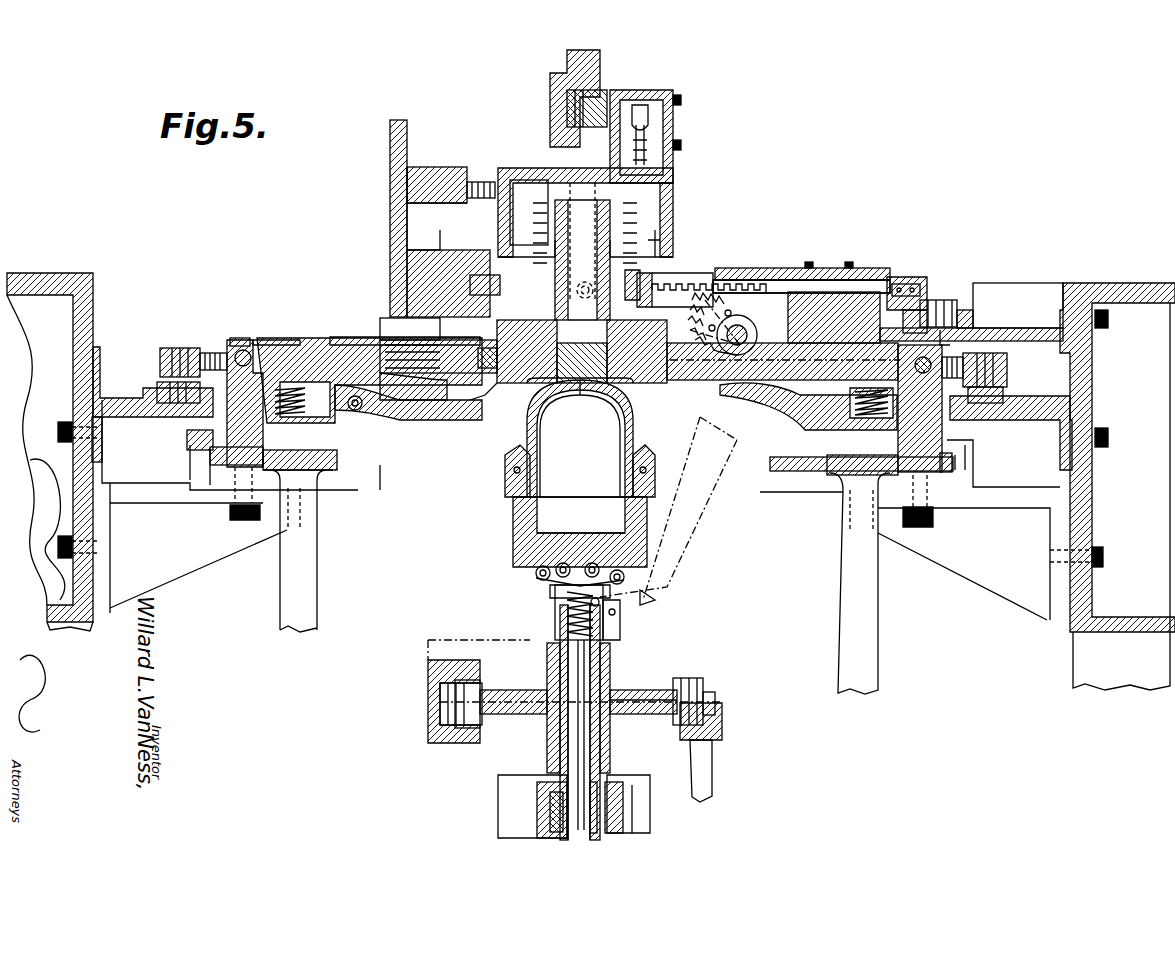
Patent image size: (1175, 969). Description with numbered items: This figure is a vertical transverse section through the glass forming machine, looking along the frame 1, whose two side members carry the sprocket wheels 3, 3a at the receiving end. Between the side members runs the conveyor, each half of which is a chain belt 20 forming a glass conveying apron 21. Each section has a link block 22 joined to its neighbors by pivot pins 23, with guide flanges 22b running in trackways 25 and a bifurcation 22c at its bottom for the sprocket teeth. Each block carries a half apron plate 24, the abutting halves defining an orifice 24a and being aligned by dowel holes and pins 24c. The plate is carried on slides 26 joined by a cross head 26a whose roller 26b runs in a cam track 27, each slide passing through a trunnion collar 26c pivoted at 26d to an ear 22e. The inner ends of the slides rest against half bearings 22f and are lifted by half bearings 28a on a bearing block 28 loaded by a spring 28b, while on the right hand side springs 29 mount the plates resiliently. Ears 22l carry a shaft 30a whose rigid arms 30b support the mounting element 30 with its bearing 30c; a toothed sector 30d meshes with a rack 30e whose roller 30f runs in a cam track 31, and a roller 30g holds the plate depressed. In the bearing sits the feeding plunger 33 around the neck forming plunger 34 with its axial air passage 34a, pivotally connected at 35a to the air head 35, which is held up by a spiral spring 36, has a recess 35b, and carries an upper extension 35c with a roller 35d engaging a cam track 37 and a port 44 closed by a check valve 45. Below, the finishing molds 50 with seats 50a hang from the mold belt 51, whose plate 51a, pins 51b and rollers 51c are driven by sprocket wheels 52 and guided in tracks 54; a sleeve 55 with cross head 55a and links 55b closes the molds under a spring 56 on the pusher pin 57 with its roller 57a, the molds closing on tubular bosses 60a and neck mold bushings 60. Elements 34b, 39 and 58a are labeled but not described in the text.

The frame 1 is at (75, 300).
The sprocket wheel 3 is at (845, 552).
The sprocket wheel 3a is at (305, 570).
The chain belt 20 is at (285, 345).
The glass conveying apron 21 is at (500, 390).
The link block 22 is at (245, 420).
The guide flanges 22b is at (215, 452).
The bifurcation 22c is at (325, 375).
The ear 22e is at (255, 342).
The half bearings 22f is at (495, 358).
The ears 22l is at (778, 290).
The pivot pins 23 is at (337, 472).
The apron plate 24 is at (490, 375).
The orifice 24a is at (530, 383).
The dowel holes and pins 24c is at (668, 506).
The trackways 25 is at (200, 470).
The slides 26 is at (212, 352).
The cross head 26a is at (168, 349).
The roller 26b is at (163, 388).
The trunnion collar 26c is at (235, 338).
The longitudinal pivot 26d is at (244, 351).
The cam track 27 is at (115, 415).
The bearing block 28 is at (405, 410).
The half bearings 28a is at (370, 405).
The spring 28b is at (290, 395).
The springs 29 is at (428, 320).
The mounting element 30 is at (668, 275).
The shaft 30a is at (740, 325).
The rigid arms 30b is at (698, 270).
The bearing 30c is at (635, 272).
The toothed sector 30d is at (740, 280).
The rack 30e is at (715, 272).
The roller 30f is at (932, 290).
The roller 30g is at (485, 275).
The cam track 31 is at (993, 306).
The feeding plunger 33 is at (582, 280).
The neck forming plunger 34 is at (582, 260).
The axial air passage 34a is at (580, 385).
The stem 34b is at (620, 410).
The air head 35 is at (510, 170).
The pivotal connection 35a is at (570, 185).
The recess 35b is at (662, 232).
The upper extension 35c is at (680, 140).
The roller 35d is at (575, 110).
The spiral spring 36 is at (530, 225).
The cam track 37 is at (572, 82).
The screw 39 is at (478, 198).
The port 44 is at (650, 108).
The check valve 45 is at (645, 105).
The finishing molds 50 is at (525, 430).
The seats 50a is at (690, 410).
The mold belt 51 is at (612, 690).
The plate 51a is at (660, 695).
The pins 51b is at (448, 705).
The rollers 51c is at (462, 680).
The sprocket wheels 52 is at (458, 298).
The tracks 54 is at (456, 745).
The sleeve 55 is at (605, 625).
The cross head 55a is at (555, 592).
The links 55b is at (578, 560).
The spring 56 is at (555, 625).
The pusher pin 57 is at (575, 738).
The roller 57a is at (537, 812).
The guide 58a is at (627, 788).
The bushings 60 is at (550, 415).
The tubular bosses 60a is at (625, 430).